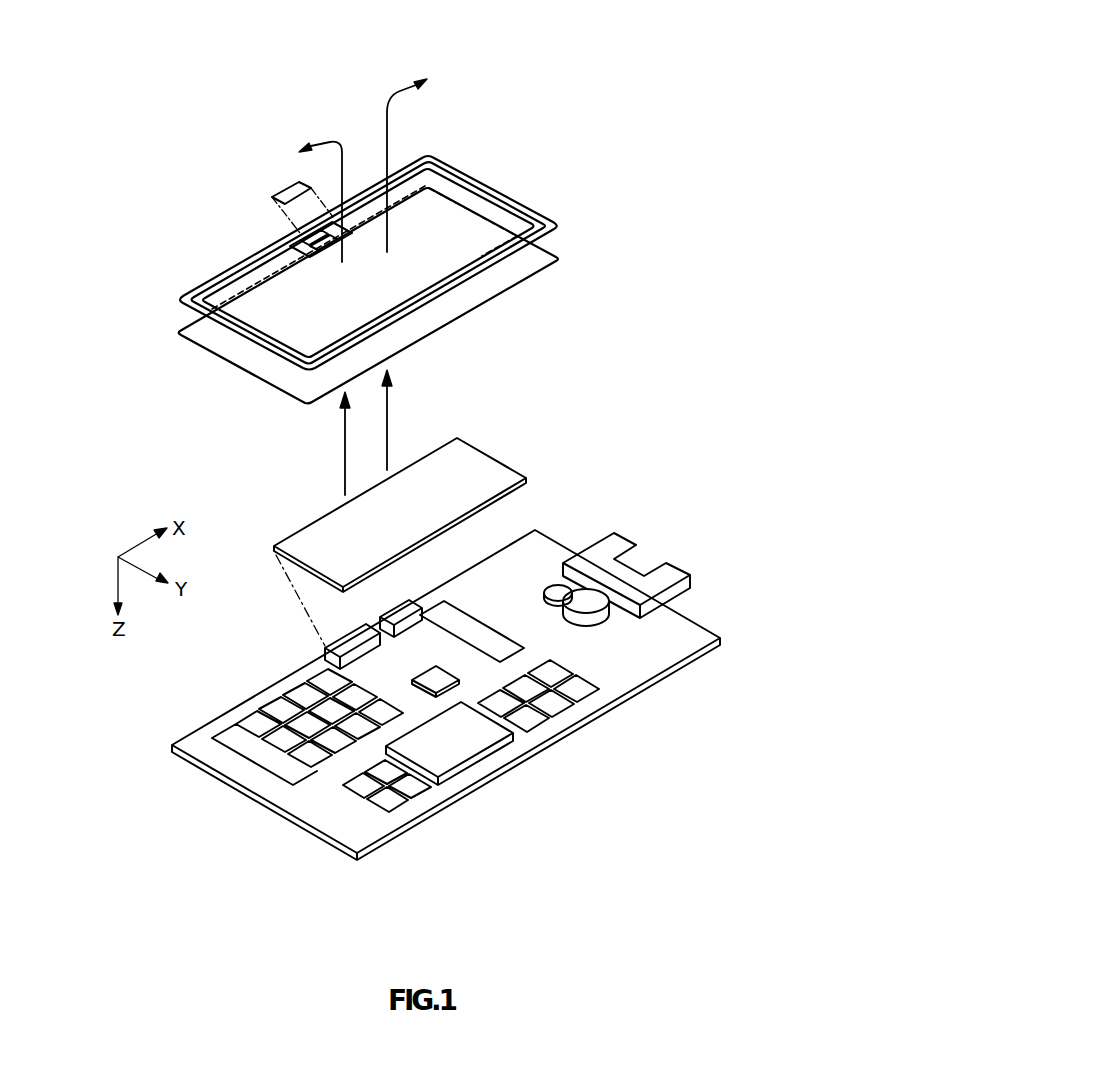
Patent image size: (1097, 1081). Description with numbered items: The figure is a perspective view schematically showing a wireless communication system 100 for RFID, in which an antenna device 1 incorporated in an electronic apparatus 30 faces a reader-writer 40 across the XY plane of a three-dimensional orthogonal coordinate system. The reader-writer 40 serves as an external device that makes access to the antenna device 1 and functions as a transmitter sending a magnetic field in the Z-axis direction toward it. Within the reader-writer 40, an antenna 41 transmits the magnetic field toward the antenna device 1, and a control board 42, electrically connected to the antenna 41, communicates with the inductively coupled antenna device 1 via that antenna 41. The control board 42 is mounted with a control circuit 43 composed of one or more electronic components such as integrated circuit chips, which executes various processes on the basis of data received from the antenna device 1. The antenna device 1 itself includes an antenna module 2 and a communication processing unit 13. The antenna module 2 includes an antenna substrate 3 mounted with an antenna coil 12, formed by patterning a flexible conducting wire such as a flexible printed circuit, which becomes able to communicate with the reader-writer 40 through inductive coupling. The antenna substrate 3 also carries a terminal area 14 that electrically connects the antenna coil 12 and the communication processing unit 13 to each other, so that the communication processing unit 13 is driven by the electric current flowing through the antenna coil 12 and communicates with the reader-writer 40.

The wireless communication system 100 is at (690, 84).
The antenna device 1 is at (603, 45).
The electronic apparatus 30 is at (437, 224).
The antenna module 2 is at (272, 153).
The antenna coil 12 is at (482, 188).
The communication processing unit 13 is at (274, 190).
The terminal area 14 is at (290, 238).
The antenna substrate 3 is at (446, 316).
The reader-writer 40 is at (733, 410).
The antenna 41 is at (482, 475).
The control board 42 is at (553, 553).
The control circuit 43 is at (283, 710).